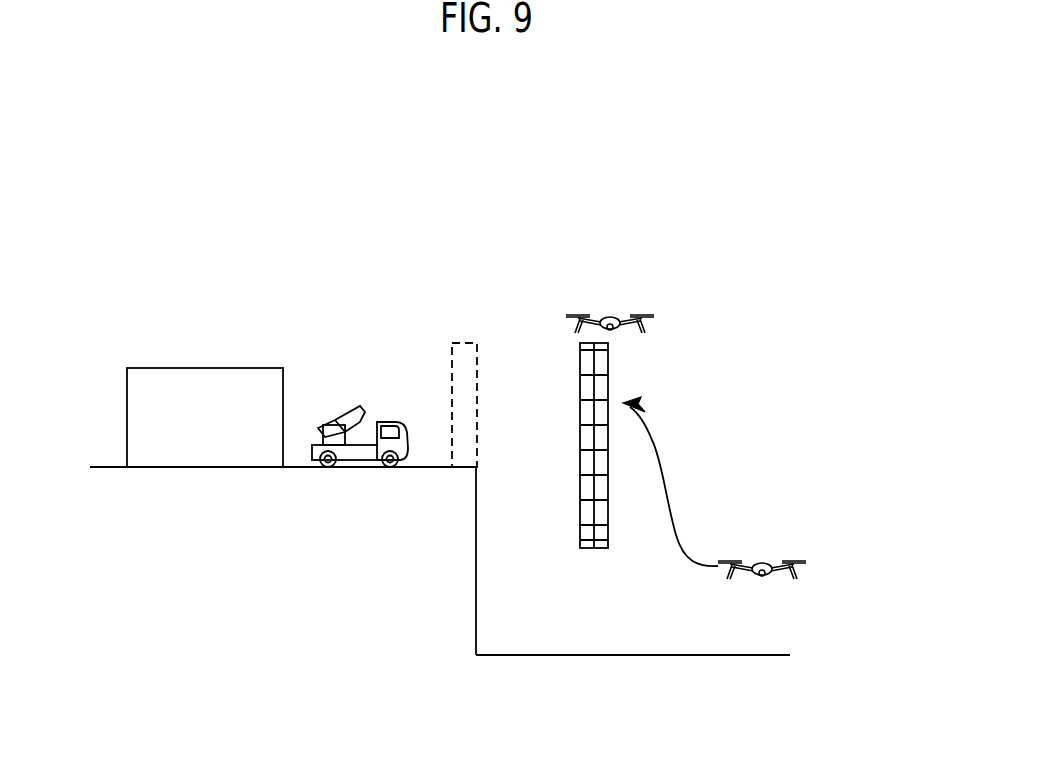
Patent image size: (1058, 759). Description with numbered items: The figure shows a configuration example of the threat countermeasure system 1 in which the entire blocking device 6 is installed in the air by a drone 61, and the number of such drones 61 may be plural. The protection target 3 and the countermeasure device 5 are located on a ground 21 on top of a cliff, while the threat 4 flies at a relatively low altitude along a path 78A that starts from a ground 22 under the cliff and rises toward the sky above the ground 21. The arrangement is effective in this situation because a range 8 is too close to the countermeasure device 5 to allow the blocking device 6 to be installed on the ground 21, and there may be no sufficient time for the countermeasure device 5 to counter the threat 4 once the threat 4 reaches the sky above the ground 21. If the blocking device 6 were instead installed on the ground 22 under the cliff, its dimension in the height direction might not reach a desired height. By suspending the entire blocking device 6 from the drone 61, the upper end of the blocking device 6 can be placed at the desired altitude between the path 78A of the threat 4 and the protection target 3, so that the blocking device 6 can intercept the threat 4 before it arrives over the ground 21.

The threat countermeasure system 1 is at (747, 128).
The protection target 3 is at (153, 468).
The threat 4 is at (804, 575).
The countermeasure device 5 is at (329, 468).
The blocking device 6 is at (592, 541).
The range 8 is at (465, 343).
The ground 21 is at (242, 468).
The ground 22 is at (625, 656).
The drone 61 is at (610, 317).
The path 78A is at (669, 512).